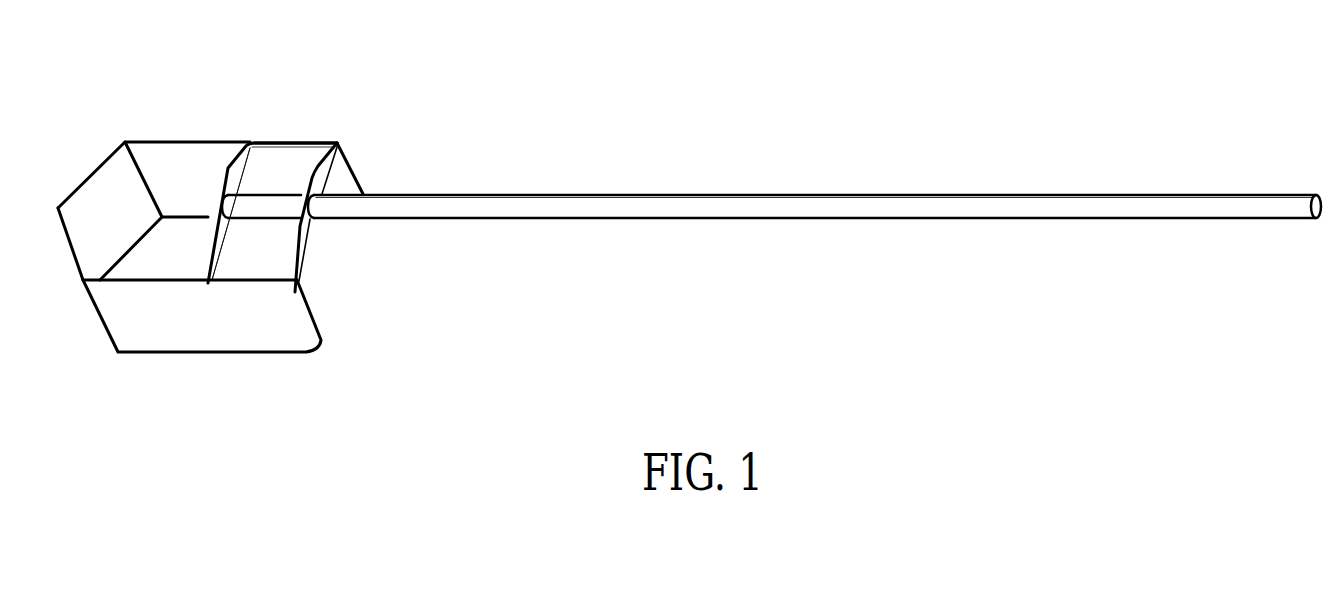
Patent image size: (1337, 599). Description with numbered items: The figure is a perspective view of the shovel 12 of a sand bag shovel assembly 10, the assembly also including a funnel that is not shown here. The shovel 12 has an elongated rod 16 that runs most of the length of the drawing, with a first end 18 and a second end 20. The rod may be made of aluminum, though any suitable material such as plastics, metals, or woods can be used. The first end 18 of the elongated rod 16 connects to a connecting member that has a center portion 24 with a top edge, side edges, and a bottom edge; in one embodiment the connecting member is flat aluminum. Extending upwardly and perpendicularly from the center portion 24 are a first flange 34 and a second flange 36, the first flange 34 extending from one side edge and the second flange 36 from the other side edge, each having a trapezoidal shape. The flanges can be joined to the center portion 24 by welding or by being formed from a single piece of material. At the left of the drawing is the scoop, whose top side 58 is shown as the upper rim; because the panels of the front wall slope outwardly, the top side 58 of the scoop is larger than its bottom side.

The sand bag shovel assembly 10 is at (437, 102).
The shovel 12 is at (423, 278).
The elongated rod 16 is at (757, 194).
The first end 18 is at (268, 210).
The second end 20 is at (1271, 220).
The center portion 24 is at (285, 163).
The first flange 34 is at (333, 176).
The second flange 36 is at (240, 141).
The top side 58 is at (163, 141).